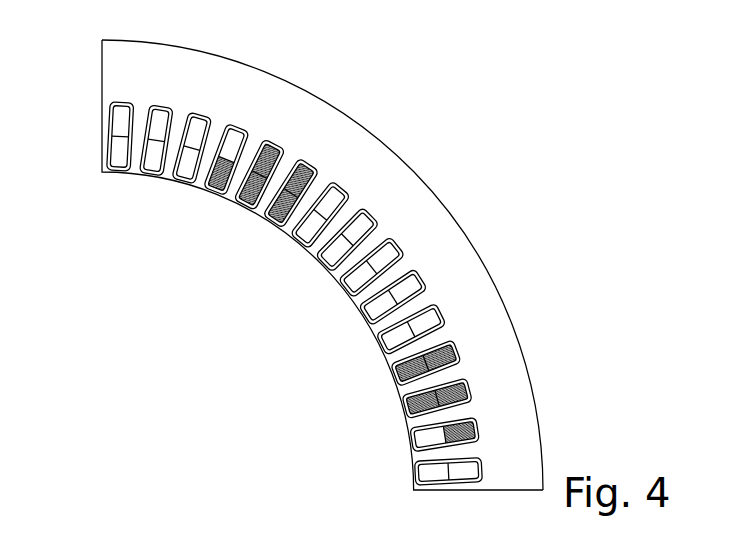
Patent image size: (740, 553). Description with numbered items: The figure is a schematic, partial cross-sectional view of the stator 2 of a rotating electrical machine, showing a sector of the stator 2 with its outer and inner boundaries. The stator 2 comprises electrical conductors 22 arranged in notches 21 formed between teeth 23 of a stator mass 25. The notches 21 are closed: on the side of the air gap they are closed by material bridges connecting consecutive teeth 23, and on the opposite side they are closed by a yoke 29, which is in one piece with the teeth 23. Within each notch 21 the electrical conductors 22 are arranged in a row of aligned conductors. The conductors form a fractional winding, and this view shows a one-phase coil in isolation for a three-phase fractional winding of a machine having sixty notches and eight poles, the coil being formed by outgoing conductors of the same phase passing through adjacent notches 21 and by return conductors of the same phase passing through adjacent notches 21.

The stator 2 is at (493, 188).
The stator mass 25 is at (341, 106).
The yoke 29 is at (377, 163).
The teeth 23 is at (317, 258).
The notches 21 is at (405, 357).
The electrical conductors 22 is at (440, 302).